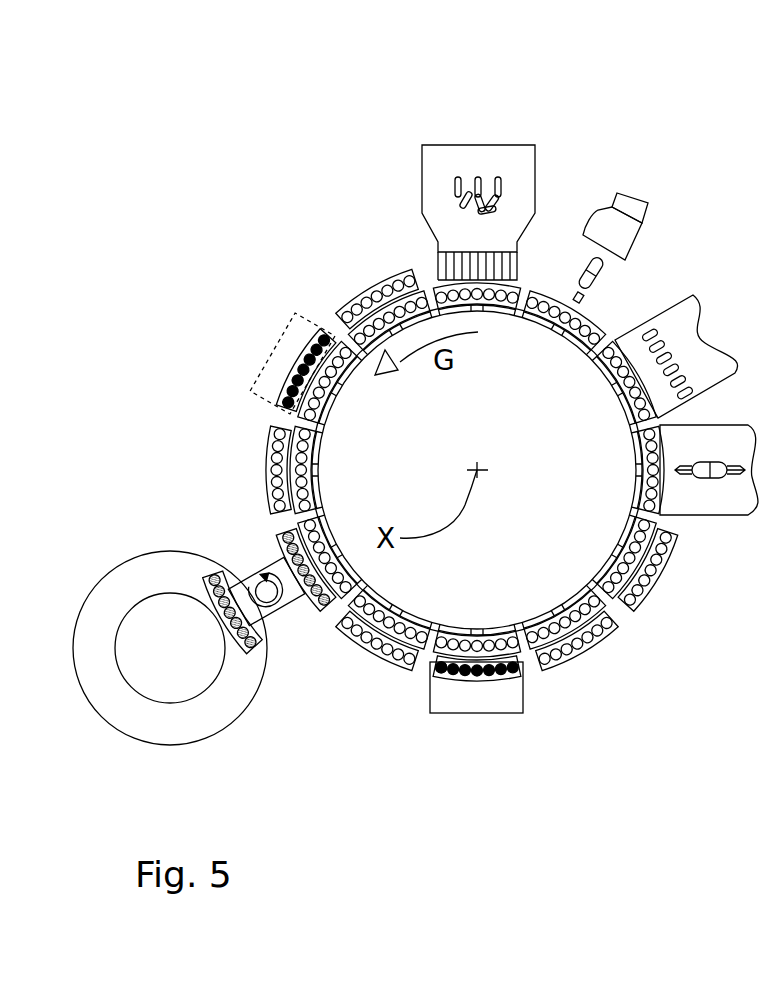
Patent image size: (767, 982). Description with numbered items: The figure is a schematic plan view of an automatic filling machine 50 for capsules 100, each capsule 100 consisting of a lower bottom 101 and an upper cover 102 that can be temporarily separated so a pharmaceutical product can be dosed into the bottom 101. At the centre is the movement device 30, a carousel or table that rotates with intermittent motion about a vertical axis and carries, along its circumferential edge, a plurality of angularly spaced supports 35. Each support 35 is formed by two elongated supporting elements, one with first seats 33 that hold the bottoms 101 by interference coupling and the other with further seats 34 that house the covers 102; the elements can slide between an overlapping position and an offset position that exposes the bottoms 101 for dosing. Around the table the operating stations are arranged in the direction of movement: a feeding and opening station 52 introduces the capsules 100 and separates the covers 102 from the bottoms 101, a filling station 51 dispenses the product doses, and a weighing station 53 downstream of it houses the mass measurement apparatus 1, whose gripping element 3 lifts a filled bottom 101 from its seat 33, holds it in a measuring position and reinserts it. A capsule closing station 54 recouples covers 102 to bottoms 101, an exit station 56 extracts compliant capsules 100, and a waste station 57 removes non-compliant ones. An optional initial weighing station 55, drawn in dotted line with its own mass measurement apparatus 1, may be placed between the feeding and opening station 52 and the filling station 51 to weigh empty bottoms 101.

The filling machine 50 is at (210, 92).
The movement device 30 is at (522, 592).
The support 35 is at (348, 262).
The first seat 33 is at (277, 447).
The further seat 34 is at (302, 472).
The mass measurement apparatus 1 is at (273, 347).
The gripping element 3 is at (437, 673).
The initial weighing station 55 is at (222, 361).
The feeding and opening station 52 is at (438, 172).
The capsule 100 is at (458, 177).
The bottom 101 is at (503, 187).
The cover 102 is at (478, 177).
The filling station 51 is at (155, 680).
The weighing station 53 is at (500, 748).
The capsule closing station 54 is at (720, 492).
The exit station 56 is at (688, 352).
The waste station 57 is at (618, 237).